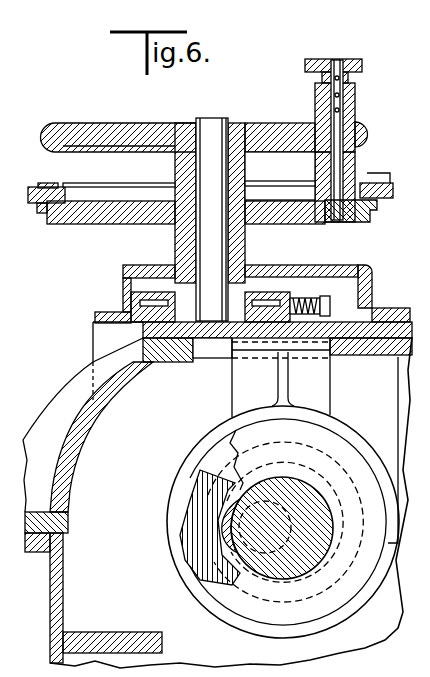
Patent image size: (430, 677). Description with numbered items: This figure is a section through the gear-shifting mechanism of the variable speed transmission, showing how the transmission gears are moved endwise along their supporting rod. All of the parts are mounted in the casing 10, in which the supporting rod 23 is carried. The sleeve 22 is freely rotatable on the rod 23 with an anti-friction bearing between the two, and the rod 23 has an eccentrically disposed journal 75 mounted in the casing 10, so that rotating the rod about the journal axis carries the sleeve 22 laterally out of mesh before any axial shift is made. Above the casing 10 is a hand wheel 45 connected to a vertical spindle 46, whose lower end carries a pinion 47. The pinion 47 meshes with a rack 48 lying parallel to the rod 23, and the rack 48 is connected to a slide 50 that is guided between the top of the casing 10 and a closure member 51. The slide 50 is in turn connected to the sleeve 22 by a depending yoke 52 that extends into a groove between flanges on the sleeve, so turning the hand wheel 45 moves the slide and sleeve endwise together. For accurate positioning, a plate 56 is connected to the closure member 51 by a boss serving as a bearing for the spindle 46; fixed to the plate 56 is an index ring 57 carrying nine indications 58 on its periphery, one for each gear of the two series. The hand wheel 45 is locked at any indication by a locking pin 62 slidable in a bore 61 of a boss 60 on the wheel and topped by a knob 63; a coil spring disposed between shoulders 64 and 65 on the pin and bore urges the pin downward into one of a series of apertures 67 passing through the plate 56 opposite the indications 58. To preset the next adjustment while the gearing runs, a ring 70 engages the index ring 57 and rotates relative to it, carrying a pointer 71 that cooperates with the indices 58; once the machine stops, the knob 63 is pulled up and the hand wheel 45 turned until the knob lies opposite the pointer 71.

The casing 10 is at (65, 598).
The sleeve 22 is at (228, 533).
The supporting rod 23 is at (302, 579).
The hand wheel 45 is at (96, 122).
The vertical spindle 46 is at (212, 118).
The pinion 47 is at (253, 300).
The rack 48 is at (293, 298).
The slide 50 is at (343, 330).
The closure member 51 is at (123, 272).
The depending yoke 52 is at (232, 374).
The plate 56 is at (110, 201).
The index ring 57 is at (70, 186).
The indications 58 is at (55, 186).
The boss 60 is at (356, 93).
The bore 61 is at (258, 125).
The locking pin 62 is at (356, 156).
The knob 63 is at (325, 59).
The shoulder 64 is at (318, 170).
The shoulder 65 is at (292, 143).
The apertures 67 is at (352, 220).
The ring 70 is at (40, 213).
The pointer 71 is at (393, 176).
The journal 75 is at (213, 594).